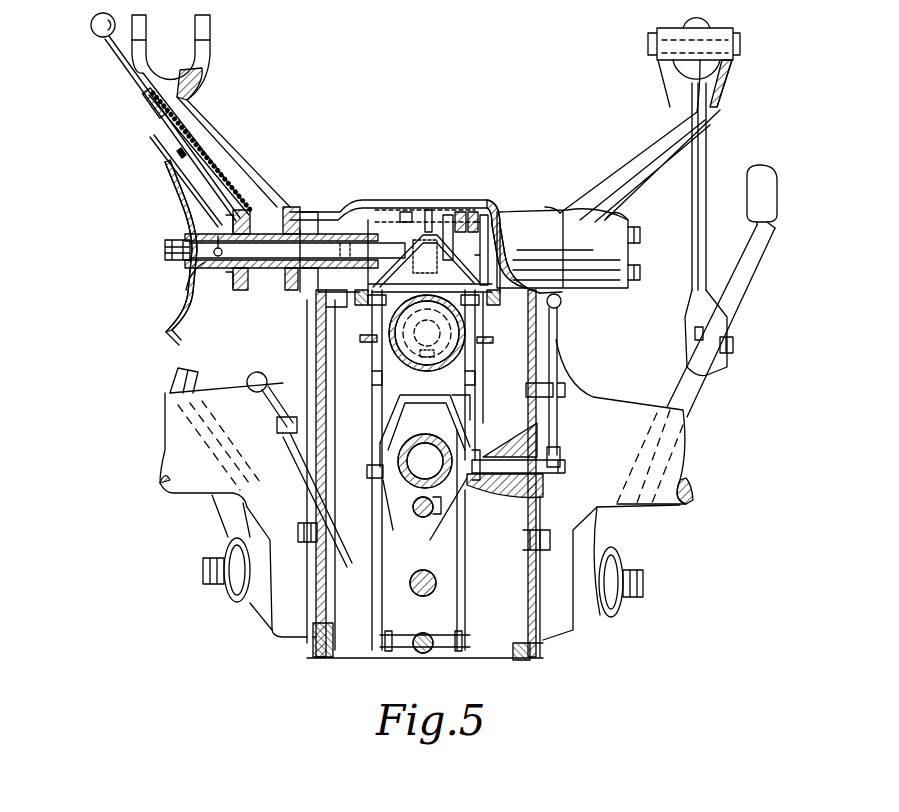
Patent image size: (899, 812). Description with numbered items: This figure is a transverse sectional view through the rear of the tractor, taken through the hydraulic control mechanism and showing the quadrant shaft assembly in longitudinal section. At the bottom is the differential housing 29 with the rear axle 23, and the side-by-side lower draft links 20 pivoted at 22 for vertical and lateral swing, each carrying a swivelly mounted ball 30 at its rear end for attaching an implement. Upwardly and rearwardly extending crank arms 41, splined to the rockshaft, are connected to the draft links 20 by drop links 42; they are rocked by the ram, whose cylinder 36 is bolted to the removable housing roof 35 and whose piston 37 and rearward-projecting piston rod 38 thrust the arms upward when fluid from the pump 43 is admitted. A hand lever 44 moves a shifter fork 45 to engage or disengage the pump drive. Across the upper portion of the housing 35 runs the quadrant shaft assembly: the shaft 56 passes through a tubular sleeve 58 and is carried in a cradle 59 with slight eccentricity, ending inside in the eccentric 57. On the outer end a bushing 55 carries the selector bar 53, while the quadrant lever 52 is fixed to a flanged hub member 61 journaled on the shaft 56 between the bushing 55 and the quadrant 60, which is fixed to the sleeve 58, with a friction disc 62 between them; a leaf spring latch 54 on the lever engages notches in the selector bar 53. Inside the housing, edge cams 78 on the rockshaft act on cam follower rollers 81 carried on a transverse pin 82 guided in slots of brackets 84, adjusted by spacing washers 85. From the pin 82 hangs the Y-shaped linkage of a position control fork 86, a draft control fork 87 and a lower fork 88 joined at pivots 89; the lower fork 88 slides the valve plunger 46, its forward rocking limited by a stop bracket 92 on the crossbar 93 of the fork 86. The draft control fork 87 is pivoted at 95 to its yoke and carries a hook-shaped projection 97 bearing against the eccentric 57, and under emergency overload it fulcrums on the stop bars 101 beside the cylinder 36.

The lower draft links 20 is at (217, 513).
The pivots 22 is at (207, 573).
The rear axle 23 is at (170, 422).
The differential housing 29 is at (308, 643).
The swivelly mounted balls 30 is at (773, 173).
The housing roof 35 is at (500, 207).
The cylinder 36 is at (403, 363).
The piston 37 is at (443, 357).
The piston rod 38 is at (387, 327).
The crank arms 41 is at (205, 120).
The drop links 42 is at (710, 147).
The pump 43 is at (410, 653).
The hand lever 44 is at (560, 320).
The shifter fork 45 is at (440, 517).
The valve plunger 46 is at (427, 655).
The quadrant lever 52 is at (91, 33).
The selector bar 53 is at (165, 183).
The leaf spring latch 54 is at (148, 138).
The bushing 55 is at (197, 265).
The shaft 56 is at (310, 247).
The eccentric 57 is at (412, 237).
The tubular sleeve 58 is at (333, 227).
The cradle 59 is at (313, 267).
The quadrant 60 is at (215, 160).
The flanged hub member 61 is at (217, 256).
The friction disc 62 is at (238, 283).
The edge cams 78 is at (483, 252).
The cam follower rollers 81 is at (487, 220).
The transverse pin 82 is at (413, 207).
The brackets 84 is at (467, 207).
The spacing washers 85 is at (450, 207).
The position control fork 86 is at (383, 413).
The draft control fork 87 is at (470, 403).
The lower fork 88 is at (467, 580).
The pivots 89 is at (367, 467).
The stop bracket 92 is at (430, 413).
The crossbar 93 is at (400, 387).
The pivot 95 is at (493, 303).
The hook-shaped projection 97 is at (423, 230).
The stop bars 101 is at (367, 343).